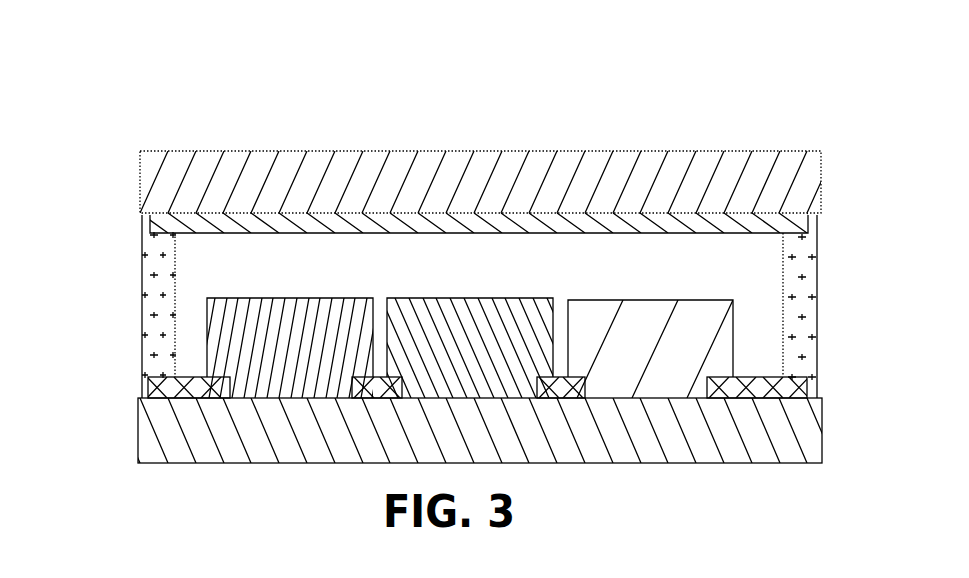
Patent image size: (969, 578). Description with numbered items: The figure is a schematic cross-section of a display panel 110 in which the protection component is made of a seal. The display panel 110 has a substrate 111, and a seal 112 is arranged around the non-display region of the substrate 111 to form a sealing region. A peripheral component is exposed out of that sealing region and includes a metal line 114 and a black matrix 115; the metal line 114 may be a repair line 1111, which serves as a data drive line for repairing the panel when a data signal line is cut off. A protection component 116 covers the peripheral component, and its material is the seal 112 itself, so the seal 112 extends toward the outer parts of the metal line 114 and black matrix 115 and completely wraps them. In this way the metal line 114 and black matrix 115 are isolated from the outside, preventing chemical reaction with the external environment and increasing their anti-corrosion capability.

The display panel 110 is at (396, 121).
The metal line 114 is at (433, 251).
The repair line 1111 is at (173, 226).
The protection component 116 is at (422, 306).
The seal 112 is at (148, 360).
The black matrix 115 is at (149, 393).
The substrate 111 is at (815, 178).